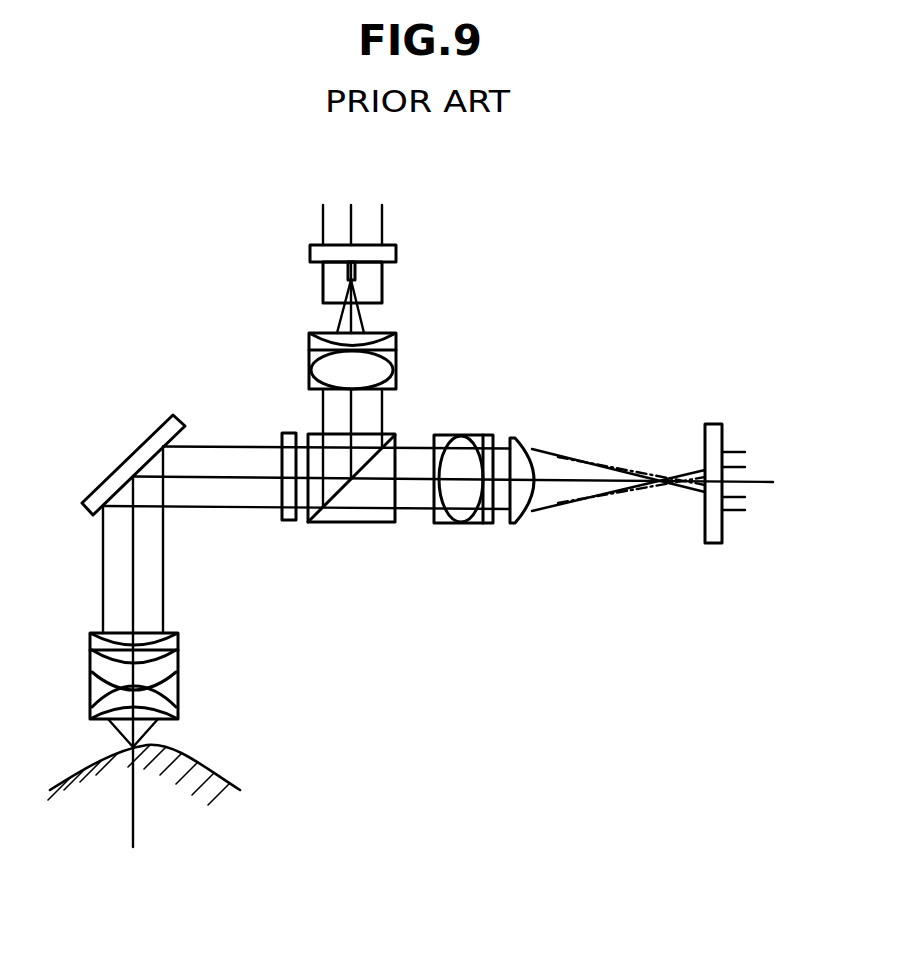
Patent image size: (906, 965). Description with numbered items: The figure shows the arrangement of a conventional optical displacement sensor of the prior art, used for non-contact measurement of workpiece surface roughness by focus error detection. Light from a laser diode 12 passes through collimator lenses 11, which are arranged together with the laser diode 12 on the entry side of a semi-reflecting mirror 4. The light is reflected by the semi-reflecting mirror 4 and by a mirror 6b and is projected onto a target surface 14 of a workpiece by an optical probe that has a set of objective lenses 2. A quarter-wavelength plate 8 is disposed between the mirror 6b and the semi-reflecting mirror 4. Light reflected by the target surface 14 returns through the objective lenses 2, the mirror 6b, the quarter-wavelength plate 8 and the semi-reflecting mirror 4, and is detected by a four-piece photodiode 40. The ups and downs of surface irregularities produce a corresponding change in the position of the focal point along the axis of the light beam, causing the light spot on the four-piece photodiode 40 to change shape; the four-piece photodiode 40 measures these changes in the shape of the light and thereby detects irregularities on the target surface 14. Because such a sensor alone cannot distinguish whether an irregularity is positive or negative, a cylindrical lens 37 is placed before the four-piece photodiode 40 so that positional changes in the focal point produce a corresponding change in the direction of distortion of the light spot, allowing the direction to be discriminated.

The laser diode 12 is at (382, 287).
The collimator lenses 11 is at (396, 352).
The mirror 6b is at (157, 430).
The quarter-wavelength plate 8 is at (287, 521).
The semi-reflecting mirror 4 is at (373, 523).
The cylindrical lens 37 is at (518, 524).
The four-piece photodiode 40 is at (713, 544).
The objective lenses 2 is at (178, 665).
The target surface 14 is at (217, 783).